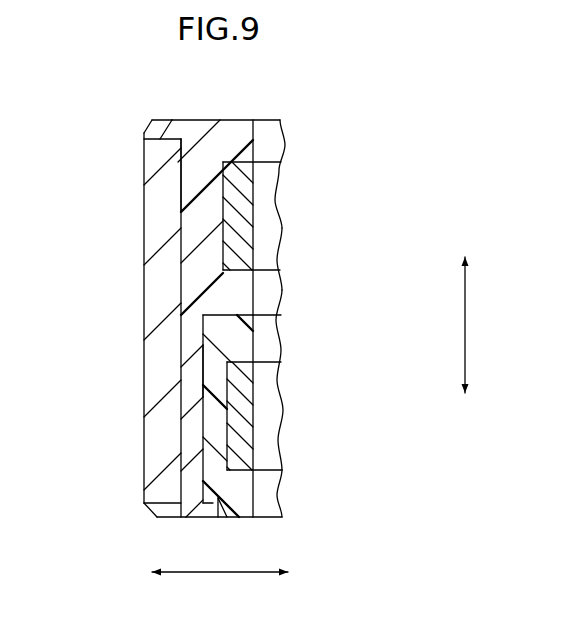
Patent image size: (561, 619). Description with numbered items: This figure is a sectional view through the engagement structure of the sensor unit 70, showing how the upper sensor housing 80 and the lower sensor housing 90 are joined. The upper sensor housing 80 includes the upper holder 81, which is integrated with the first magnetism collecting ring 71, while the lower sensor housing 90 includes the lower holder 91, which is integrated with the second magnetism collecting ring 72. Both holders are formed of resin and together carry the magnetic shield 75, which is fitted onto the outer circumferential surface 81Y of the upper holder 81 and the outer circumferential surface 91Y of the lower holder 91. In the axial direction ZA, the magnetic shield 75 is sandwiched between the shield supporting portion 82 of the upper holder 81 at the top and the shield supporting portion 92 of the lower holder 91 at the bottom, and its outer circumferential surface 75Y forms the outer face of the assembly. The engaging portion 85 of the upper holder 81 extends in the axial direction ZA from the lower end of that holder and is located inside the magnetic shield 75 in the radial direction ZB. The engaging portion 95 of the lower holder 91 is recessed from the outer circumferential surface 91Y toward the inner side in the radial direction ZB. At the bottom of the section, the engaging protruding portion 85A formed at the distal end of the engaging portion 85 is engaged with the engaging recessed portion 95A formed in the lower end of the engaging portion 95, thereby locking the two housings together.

The sensor unit 70 is at (70, 95).
The upper sensor housing 80 is at (295, 113).
The lower sensor housing 90 is at (308, 525).
The shield supporting portion 82 is at (163, 120).
The upper holder 81 is at (233, 120).
The outer circumferential surface of the upper holder 81Y is at (178, 192).
The magnetic shield 75 is at (144, 288).
The outer circumferential surface of the magnetic shield 75Y is at (144, 323).
The first magnetism collecting ring 71 is at (277, 222).
The second magnetism collecting ring 72 is at (280, 421).
The engaging portion 85 is at (190, 447).
The engaging protruding portion 85A is at (203, 512).
The engaging portion 95 is at (203, 419).
The engaging recessed portion 95A is at (243, 512).
The lower holder 91 is at (258, 497).
The outer circumferential surface of the lower holder 91Y is at (182, 373).
The shield supporting portion 92 is at (153, 512).
The axial direction ZA is at (483, 325).
The radial direction ZB is at (220, 561).